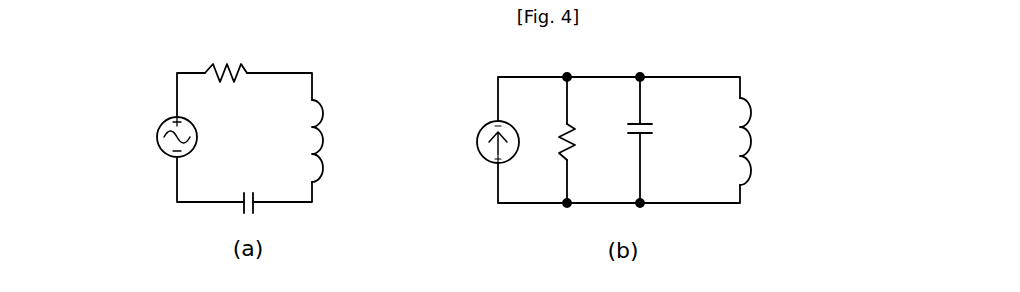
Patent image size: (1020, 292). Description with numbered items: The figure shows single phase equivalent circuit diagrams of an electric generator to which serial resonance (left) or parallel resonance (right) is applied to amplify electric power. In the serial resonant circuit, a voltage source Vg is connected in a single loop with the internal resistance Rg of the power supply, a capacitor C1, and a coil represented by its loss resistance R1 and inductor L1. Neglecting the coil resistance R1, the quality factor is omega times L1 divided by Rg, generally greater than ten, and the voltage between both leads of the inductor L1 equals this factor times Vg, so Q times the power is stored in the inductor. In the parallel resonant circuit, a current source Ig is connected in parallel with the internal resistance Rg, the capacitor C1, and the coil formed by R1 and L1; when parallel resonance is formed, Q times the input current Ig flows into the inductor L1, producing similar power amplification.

The internal resistance of the power supply Rg is at (408, 100).
The power supply voltage Vg is at (158, 137).
The input current Ig is at (487, 142).
The loss resistance of the coil R1 is at (546, 141).
The inductor L1 is at (546, 141).
The capacitor C1 is at (466, 168).